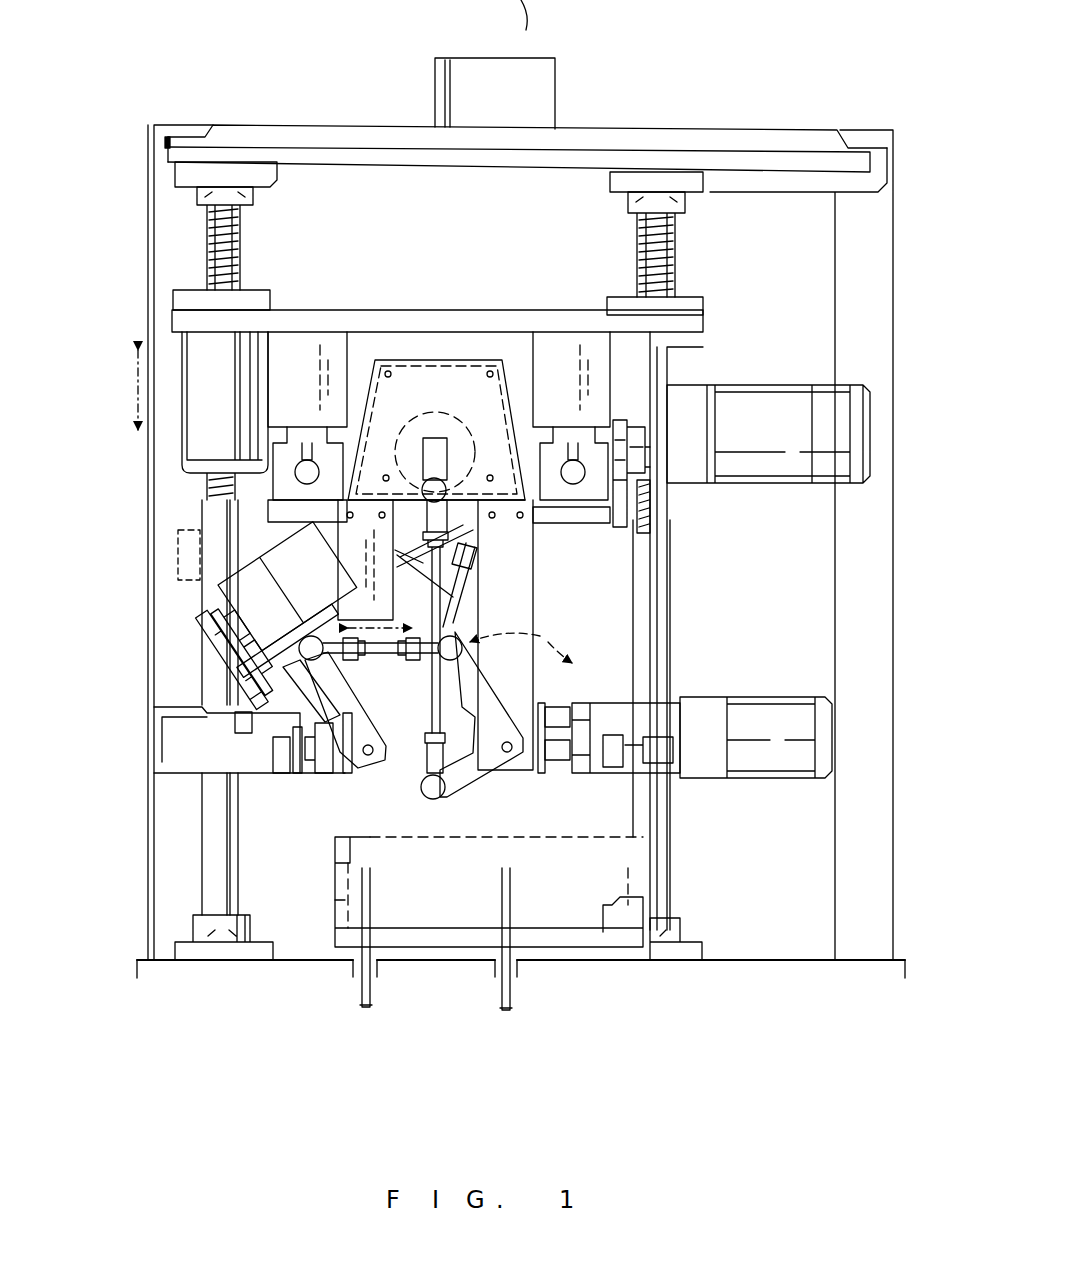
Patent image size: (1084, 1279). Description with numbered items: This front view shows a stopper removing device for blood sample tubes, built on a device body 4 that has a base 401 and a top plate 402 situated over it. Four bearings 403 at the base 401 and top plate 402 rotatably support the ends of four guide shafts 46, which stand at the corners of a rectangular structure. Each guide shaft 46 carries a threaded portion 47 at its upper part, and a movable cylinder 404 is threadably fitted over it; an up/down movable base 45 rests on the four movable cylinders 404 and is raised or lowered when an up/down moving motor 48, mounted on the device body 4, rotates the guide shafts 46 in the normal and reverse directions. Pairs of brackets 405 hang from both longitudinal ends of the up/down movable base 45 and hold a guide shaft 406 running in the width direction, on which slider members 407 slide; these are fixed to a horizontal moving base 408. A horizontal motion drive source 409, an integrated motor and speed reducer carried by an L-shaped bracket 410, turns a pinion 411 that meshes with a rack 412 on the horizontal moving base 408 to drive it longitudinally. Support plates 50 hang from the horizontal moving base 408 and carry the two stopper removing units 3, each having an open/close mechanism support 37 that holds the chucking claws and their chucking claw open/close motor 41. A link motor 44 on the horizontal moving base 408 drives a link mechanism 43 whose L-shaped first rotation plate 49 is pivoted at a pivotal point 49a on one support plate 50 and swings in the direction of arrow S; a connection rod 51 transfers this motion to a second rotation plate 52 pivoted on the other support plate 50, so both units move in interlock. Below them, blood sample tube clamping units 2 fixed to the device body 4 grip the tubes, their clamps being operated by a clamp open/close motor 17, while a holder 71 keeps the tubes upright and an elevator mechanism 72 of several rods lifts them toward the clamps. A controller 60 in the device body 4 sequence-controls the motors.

The blood sample tube clamping unit 2 is at (294, 788).
The stopper removing unit 3 is at (493, 343).
The device body 4 is at (148, 870).
The clamp open/close motor 17 is at (760, 763).
The open/close mechanism support 37 is at (257, 674).
The chucking claw open/close motor 41 is at (240, 594).
The link mechanism 43 is at (447, 591).
The link motor 44 is at (431, 358).
The up/down movable base 45 is at (196, 322).
The guide shaft 46 is at (444, 251).
The threaded portion 47 is at (210, 257).
The up/down moving motor 48 is at (178, 553).
The first rotation plate 49 is at (474, 775).
The pivotal point 49a is at (511, 765).
The support plate 50 is at (346, 579).
The connection rod 51 is at (377, 660).
The second rotation plate 52 is at (352, 760).
The controller 60 is at (538, 68).
The holder 71 is at (573, 952).
The elevator mechanism 72 is at (357, 975).
The base 401 is at (785, 958).
The top plate 402 is at (780, 160).
The bearing 403 is at (258, 178).
The movable cylinder 404 is at (195, 357).
The bracket 405 is at (303, 350).
The guide shaft 406 is at (296, 468).
The slider member 407 is at (273, 488).
The horizontal moving base 408 is at (575, 535).
The horizontal motion drive source 409 is at (855, 485).
The L-shaped bracket 410 is at (660, 362).
The pinion 411 is at (627, 458).
The rack 412 is at (622, 512).
The arrow S is at (521, 642).